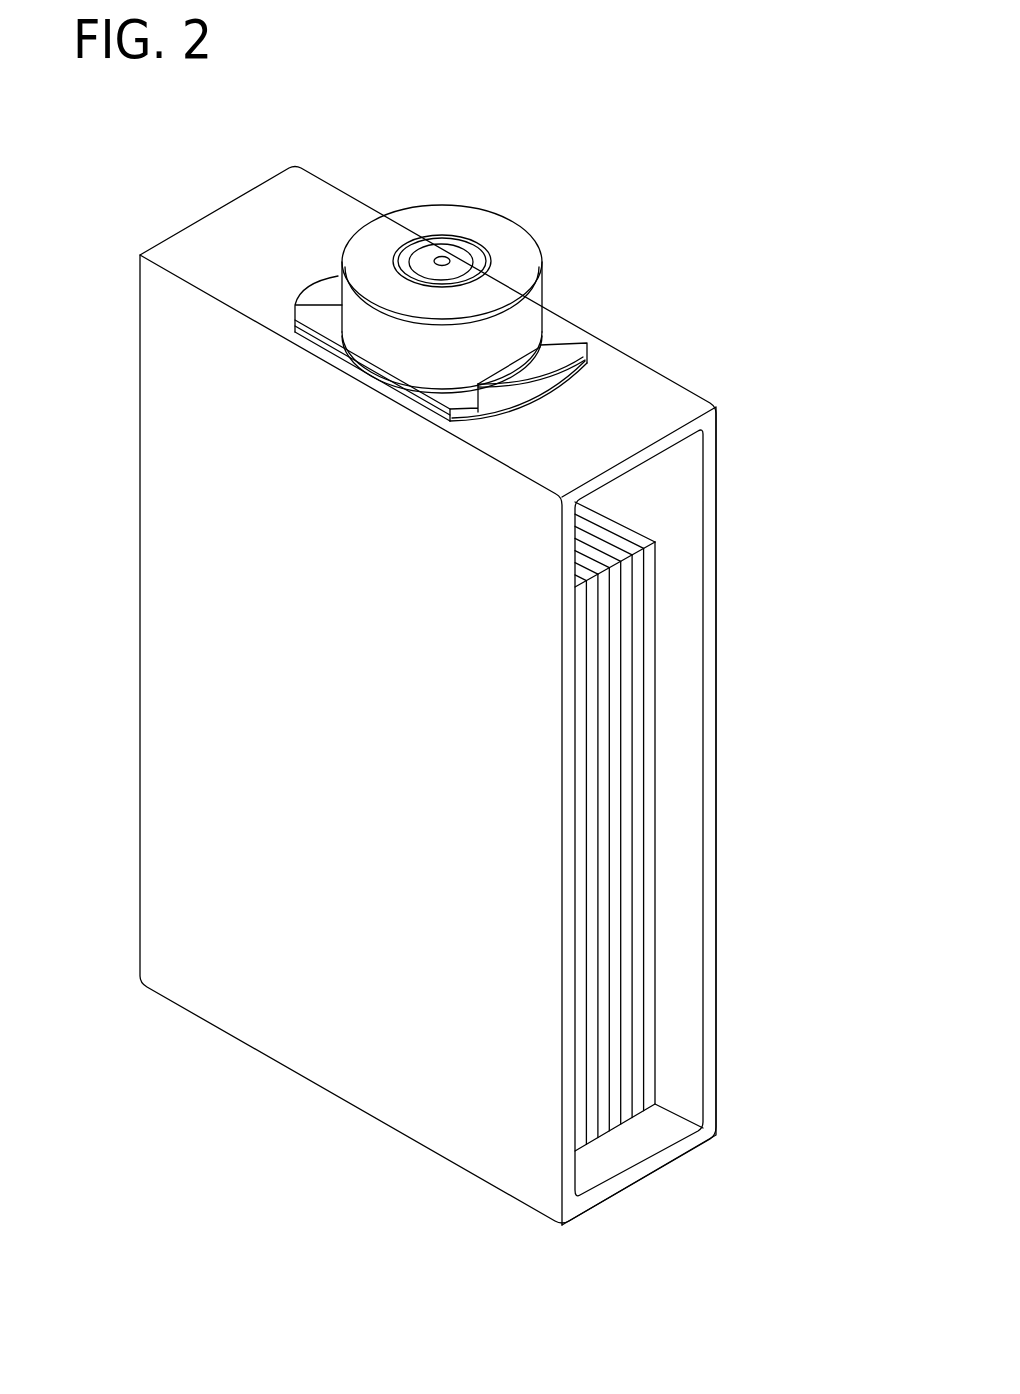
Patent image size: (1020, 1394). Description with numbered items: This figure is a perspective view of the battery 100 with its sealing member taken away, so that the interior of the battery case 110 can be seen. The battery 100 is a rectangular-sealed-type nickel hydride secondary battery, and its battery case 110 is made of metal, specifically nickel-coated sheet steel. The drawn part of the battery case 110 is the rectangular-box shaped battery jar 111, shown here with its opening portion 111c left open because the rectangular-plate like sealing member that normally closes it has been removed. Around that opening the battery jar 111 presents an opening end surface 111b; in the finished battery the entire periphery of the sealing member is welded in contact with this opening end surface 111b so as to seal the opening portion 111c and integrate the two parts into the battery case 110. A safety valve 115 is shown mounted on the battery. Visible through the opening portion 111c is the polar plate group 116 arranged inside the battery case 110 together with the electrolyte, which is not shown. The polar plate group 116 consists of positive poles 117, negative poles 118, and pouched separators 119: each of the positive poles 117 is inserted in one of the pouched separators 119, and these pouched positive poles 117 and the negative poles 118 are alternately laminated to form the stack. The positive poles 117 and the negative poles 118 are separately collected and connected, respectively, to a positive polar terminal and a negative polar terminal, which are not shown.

The battery 100 is at (367, 158).
The battery case 110 is at (138, 627).
The battery jar 111 is at (157, 474).
The opening end surface 111b is at (710, 727).
The opening portion 111c is at (677, 913).
The safety valve 115 is at (462, 223).
The polar plate group 116 is at (635, 533).
The positive poles 117 is at (680, 837).
The negative poles 118 is at (713, 831).
The pouched separators 119 is at (731, 834).